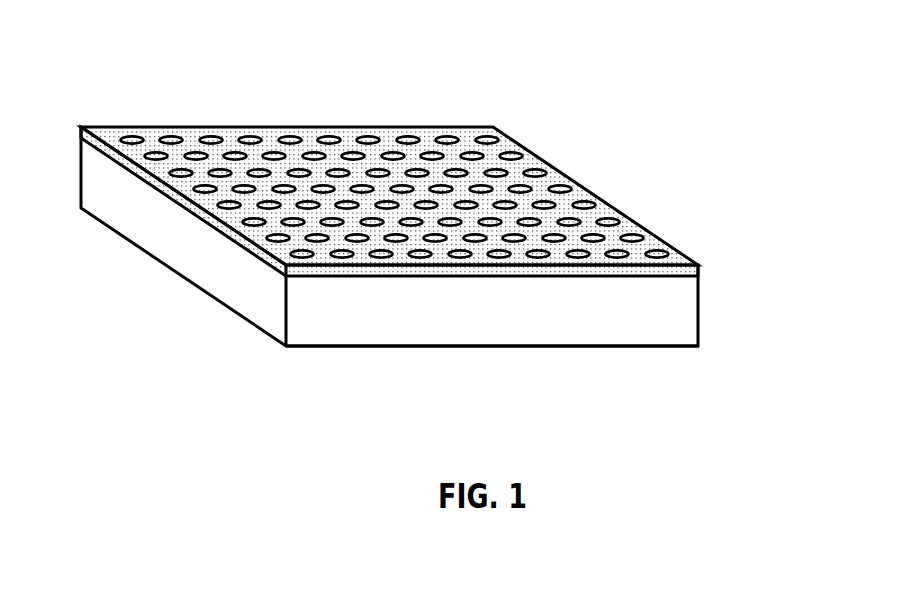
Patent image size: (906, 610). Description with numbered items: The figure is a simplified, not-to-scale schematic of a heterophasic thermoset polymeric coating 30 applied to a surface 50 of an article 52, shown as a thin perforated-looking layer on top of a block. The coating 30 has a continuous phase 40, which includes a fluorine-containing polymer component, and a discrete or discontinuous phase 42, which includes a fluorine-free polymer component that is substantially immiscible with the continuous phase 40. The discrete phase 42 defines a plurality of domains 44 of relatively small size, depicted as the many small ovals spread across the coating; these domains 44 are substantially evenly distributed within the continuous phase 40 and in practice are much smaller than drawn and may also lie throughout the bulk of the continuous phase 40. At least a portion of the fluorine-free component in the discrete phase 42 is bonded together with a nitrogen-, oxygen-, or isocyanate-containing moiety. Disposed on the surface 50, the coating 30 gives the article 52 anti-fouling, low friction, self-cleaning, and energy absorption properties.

The heterophasic thermoset polymeric coating 30 is at (707, 263).
The continuous phase 40 is at (188, 137).
The discrete phase 42 is at (245, 138).
The domains 44 is at (607, 217).
The surface 50 is at (148, 187).
The article 52 is at (457, 347).